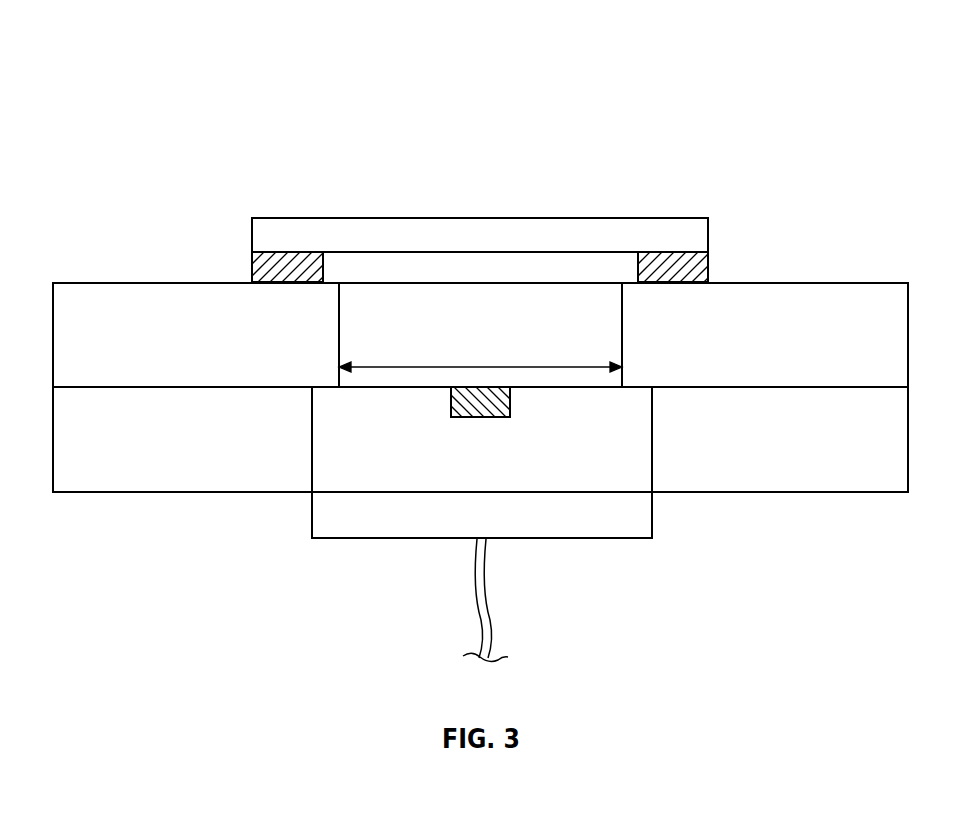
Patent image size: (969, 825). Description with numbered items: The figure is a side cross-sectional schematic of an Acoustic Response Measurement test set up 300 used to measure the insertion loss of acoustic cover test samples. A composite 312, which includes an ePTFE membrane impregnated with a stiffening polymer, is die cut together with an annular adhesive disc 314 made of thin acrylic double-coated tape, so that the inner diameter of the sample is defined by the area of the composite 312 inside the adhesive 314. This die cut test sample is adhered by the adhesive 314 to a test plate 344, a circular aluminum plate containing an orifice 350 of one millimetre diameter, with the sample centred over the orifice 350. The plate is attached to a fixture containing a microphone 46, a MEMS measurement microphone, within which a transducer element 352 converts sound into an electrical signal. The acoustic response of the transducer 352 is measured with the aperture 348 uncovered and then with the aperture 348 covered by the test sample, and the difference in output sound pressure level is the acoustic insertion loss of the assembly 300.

The Acoustic Response Measurement test set up 300 is at (130, 66).
The composite 312 is at (334, 228).
The adhesive disc 314 is at (257, 267).
The test plate 344 is at (811, 295).
The aperture 348 is at (507, 326).
The orifice 350 is at (553, 363).
The transducer element 352 is at (469, 418).
The microphone 46 is at (604, 540).